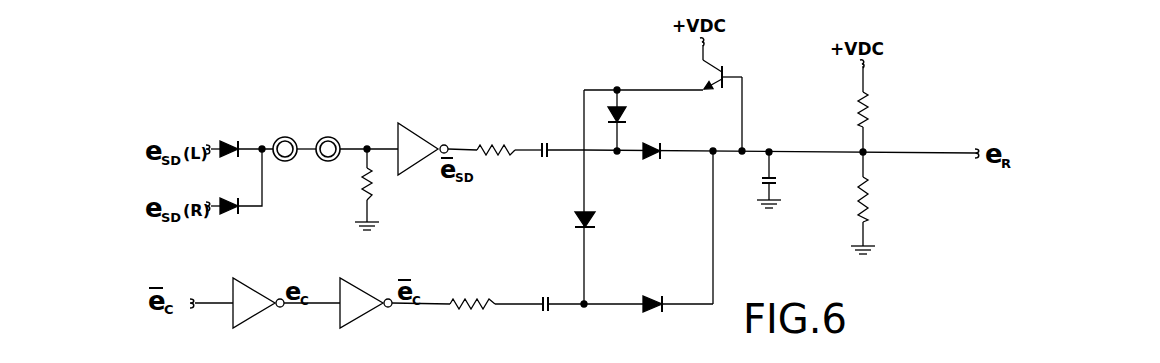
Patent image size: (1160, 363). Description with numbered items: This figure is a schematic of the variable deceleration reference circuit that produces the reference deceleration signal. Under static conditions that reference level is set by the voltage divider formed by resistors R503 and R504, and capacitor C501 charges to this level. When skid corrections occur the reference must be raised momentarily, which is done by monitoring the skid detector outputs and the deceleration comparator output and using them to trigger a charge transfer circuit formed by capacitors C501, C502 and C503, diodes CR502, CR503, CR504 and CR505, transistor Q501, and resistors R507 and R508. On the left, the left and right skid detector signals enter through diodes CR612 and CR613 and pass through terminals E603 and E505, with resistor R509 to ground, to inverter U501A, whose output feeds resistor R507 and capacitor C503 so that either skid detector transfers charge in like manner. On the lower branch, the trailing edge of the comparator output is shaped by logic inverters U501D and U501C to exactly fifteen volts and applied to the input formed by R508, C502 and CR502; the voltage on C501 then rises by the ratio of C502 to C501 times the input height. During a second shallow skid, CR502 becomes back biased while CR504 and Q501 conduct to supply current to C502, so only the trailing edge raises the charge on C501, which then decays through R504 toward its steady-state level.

The diode CR612 is at (221, 137).
The diode CR613 is at (221, 194).
The connector terminal E603 is at (283, 139).
The connector terminal E505 is at (327, 139).
The resistor R509 is at (344, 189).
The inverter U501A is at (423, 140).
The resistor R507 is at (493, 140).
The capacitor C503 is at (553, 141).
The diode CR505 is at (645, 120).
The transistor Q501 is at (735, 67).
The diode CR503 is at (654, 165).
The diode CR504 is at (544, 219).
The capacitor C501 is at (791, 180).
The resistor R503 is at (885, 109).
The resistor R504 is at (881, 203).
The logic inverter U501D is at (259, 292).
The logic inverter U501C is at (366, 292).
The resistor R508 is at (470, 294).
The capacitor C502 is at (543, 295).
The diode CR502 is at (652, 293).